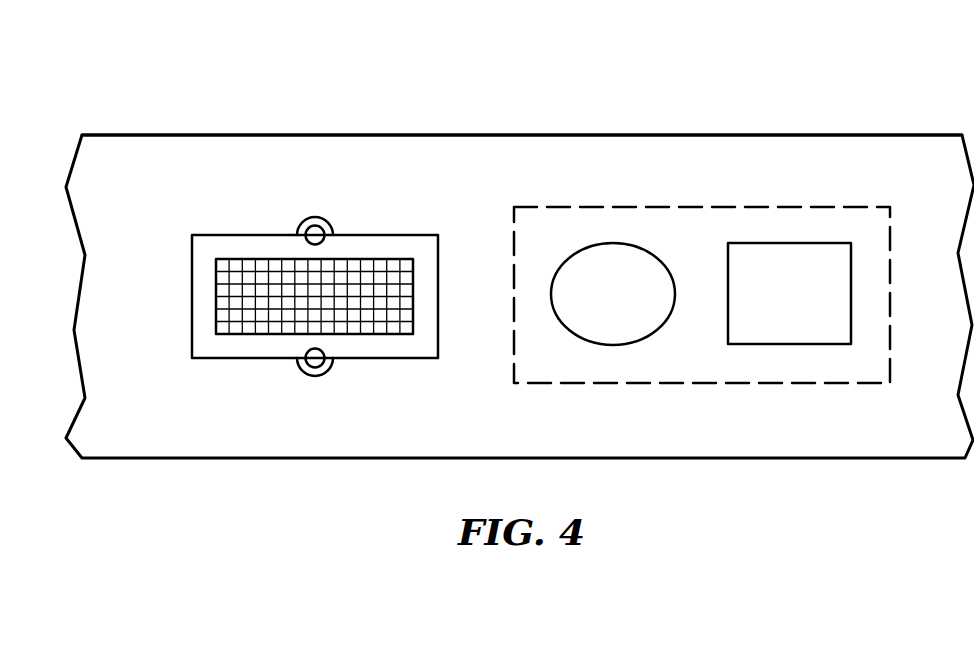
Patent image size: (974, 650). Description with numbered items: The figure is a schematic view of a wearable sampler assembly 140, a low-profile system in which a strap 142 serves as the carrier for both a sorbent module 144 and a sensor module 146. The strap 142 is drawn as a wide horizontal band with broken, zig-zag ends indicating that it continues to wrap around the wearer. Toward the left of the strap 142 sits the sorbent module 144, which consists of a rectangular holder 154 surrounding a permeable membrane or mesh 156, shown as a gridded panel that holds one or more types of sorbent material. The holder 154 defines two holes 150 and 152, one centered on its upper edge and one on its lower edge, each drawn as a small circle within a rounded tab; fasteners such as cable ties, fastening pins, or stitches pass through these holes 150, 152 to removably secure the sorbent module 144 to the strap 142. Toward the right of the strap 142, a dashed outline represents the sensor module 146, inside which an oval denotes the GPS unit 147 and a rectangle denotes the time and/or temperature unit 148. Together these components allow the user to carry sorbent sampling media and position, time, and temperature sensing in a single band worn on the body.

The sampler assembly 140 is at (608, 46).
The strap 142 is at (188, 134).
The sorbent module 144 is at (252, 224).
The sensor module 146 is at (702, 192).
The GPS unit 147 is at (622, 345).
The time and/or temperature unit 148 is at (765, 344).
The hole 150 is at (322, 230).
The hole 152 is at (331, 362).
The holder 154 is at (239, 348).
The permeable membrane or mesh 156 is at (226, 305).